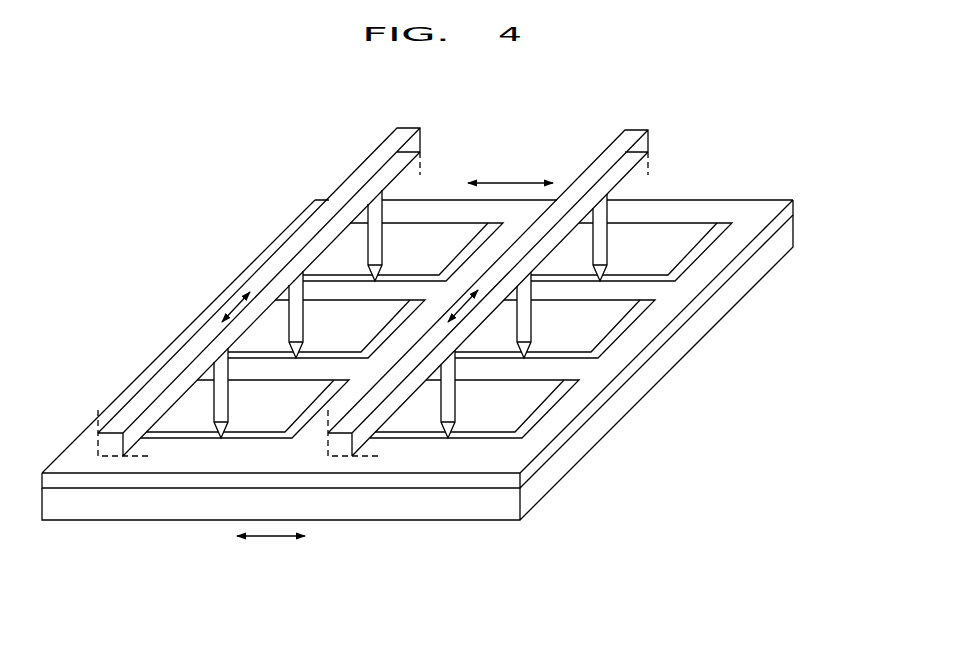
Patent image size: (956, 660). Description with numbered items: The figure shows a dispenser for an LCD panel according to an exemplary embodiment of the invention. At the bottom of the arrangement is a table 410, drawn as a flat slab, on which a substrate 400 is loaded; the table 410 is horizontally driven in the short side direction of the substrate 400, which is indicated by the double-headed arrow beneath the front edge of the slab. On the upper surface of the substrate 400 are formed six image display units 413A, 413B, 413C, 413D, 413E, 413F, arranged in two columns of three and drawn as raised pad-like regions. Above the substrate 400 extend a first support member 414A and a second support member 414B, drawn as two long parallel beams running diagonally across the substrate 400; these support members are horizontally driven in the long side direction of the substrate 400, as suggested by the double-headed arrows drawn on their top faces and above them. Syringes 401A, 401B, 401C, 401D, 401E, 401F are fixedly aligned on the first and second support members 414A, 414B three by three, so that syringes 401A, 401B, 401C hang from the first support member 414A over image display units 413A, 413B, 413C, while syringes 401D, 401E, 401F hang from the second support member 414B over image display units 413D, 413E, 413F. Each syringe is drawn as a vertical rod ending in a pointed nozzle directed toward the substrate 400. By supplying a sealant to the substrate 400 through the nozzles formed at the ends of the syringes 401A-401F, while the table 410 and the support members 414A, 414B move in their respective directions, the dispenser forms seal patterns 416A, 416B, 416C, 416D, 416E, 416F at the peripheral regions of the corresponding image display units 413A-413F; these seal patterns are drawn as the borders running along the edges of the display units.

The substrate 400 is at (378, 481).
The table 410 is at (468, 512).
The syringe 401A is at (607, 216).
The syringe 401B is at (529, 335).
The syringe 401C is at (456, 404).
The syringe 401D is at (367, 245).
The syringe 401E is at (297, 292).
The syringe 401F is at (220, 396).
The image display unit 413A is at (682, 260).
The image display unit 413B is at (585, 337).
The image display unit 413C is at (512, 418).
The image display unit 413D is at (434, 260).
The image display unit 413E is at (360, 337).
The image display unit 413F is at (290, 418).
The first support member 414A is at (625, 130).
The second support member 414B is at (397, 128).
The seal pattern 416A is at (703, 252).
The seal pattern 416B is at (630, 325).
The seal pattern 416C is at (549, 410).
The seal pattern 416D is at (437, 223).
The seal pattern 416E is at (368, 297).
The seal pattern 416F is at (265, 438).